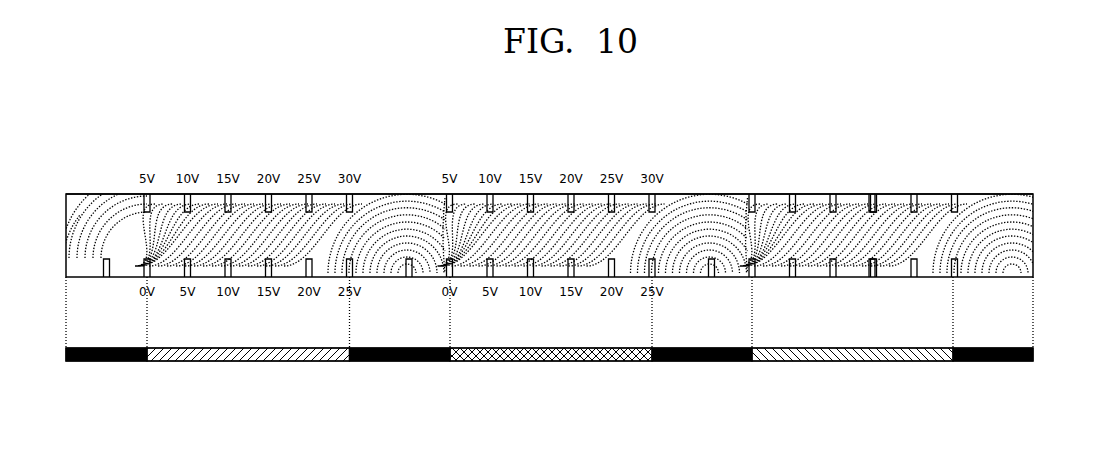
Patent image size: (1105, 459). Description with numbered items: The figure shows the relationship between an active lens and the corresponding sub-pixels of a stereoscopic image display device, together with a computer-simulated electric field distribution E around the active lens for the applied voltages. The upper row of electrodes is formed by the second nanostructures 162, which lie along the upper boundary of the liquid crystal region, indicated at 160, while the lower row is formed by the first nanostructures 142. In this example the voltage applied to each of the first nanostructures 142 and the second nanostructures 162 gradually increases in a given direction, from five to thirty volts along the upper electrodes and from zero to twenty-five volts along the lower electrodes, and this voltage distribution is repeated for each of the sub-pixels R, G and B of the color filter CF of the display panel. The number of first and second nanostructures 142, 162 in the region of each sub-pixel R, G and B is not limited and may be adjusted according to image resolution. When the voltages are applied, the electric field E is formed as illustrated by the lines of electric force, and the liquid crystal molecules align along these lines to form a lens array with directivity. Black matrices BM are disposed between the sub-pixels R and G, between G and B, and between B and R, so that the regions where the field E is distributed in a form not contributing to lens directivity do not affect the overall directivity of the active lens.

The first nanostructures 142 is at (872, 277).
The first substrate 160 is at (927, 193).
The second nanostructures 162 is at (872, 194).
The electric field E is at (944, 197).
The color filter CF is at (576, 377).
The black matrices BM is at (995, 387).
The sub-pixel R is at (248, 362).
The sub-pixel G is at (537, 362).
The sub-pixel B is at (850, 362).